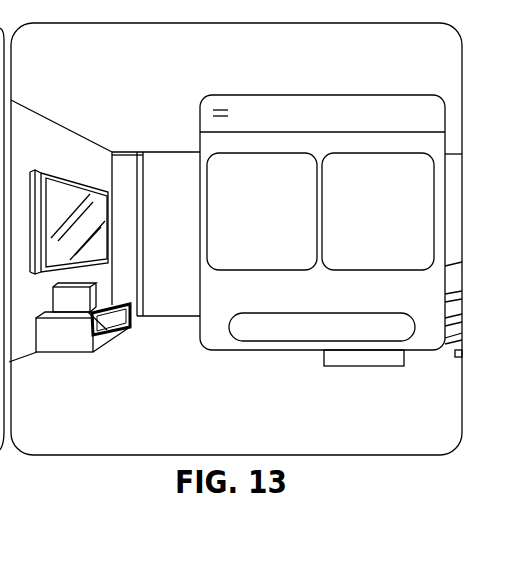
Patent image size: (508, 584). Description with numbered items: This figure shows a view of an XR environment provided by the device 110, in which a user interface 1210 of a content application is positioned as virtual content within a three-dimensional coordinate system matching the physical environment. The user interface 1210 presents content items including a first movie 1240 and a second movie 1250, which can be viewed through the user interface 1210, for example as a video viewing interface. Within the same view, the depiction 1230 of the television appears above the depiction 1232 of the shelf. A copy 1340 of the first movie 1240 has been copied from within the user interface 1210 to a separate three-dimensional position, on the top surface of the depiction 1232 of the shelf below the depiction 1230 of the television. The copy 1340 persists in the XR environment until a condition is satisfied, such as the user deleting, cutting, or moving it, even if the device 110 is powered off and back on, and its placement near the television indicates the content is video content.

The device 110 is at (77, 52).
The user interface 1210 is at (200, 110).
The depiction of the television 1230 is at (40, 172).
The depiction of the shelf 1232 is at (56, 347).
The first movie 1240 is at (233, 266).
The second movie 1250 is at (348, 266).
The copy of the content item 1340 is at (107, 331).